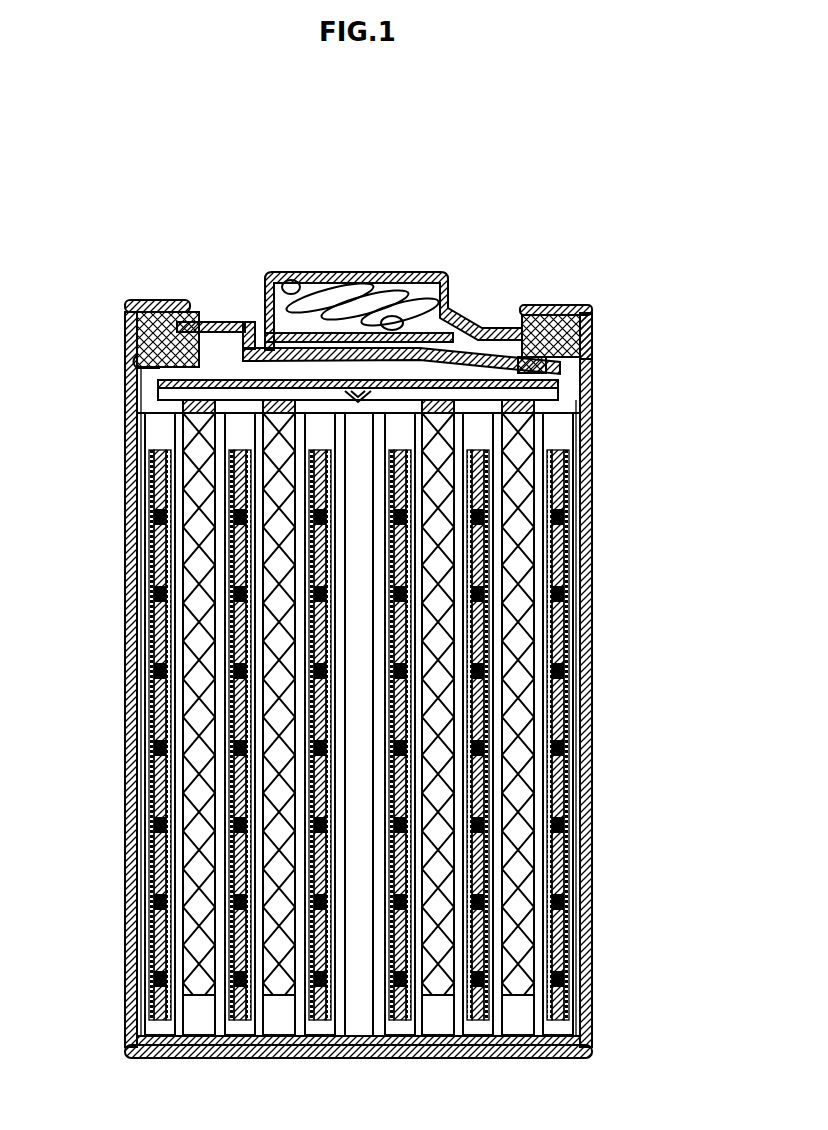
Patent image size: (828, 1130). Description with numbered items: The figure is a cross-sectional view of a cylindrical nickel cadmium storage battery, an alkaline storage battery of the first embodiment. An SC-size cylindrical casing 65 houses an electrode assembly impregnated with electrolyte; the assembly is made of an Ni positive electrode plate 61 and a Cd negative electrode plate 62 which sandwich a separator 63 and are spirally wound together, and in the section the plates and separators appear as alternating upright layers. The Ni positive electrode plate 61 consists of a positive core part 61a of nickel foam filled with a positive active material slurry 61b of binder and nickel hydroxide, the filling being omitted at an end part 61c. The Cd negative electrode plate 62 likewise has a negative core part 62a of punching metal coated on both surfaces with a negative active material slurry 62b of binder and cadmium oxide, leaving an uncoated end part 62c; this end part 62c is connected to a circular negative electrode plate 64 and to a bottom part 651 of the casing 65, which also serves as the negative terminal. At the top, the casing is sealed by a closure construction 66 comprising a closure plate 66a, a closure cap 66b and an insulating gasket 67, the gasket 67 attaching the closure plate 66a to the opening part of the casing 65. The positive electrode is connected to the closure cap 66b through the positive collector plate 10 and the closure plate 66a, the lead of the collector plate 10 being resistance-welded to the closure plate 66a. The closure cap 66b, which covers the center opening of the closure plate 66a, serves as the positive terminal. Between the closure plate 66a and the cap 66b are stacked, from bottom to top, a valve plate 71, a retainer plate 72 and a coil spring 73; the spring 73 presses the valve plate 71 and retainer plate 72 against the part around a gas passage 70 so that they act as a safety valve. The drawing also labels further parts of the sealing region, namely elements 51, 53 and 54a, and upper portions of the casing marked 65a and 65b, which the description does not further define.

The positive collector plate 10 is at (152, 387).
The sealing plate 51 is at (480, 368).
The insulating gasket 53 is at (522, 373).
The insulator plate 54a is at (558, 400).
The Ni positive electrode plate 61 is at (439, 717).
The positive core part 61a is at (556, 463).
The positive active material slurry 61b is at (541, 525).
The end part 61c is at (558, 415).
The Cd negative electrode plate 62 is at (456, 717).
The negative core part 62a is at (580, 938).
The negative active material slurry 62b is at (565, 992).
The end part 62c is at (560, 1034).
The separator 63 is at (500, 580).
The negative electrode plate 64 is at (560, 1046).
The casing 65 is at (593, 748).
The battery case side portion 65a is at (588, 347).
The battery case crimped portion 65b is at (568, 308).
The bottom part 651 is at (330, 1062).
The closure construction 66 is at (209, 278).
The closure plate 66a is at (192, 325).
The closure cap 66b is at (226, 330).
The insulating gasket 67 is at (127, 322).
The gas passage 70 is at (360, 330).
The valve plate 71 is at (427, 340).
The retainer plate 72 is at (388, 320).
The coil spring 73 is at (330, 292).